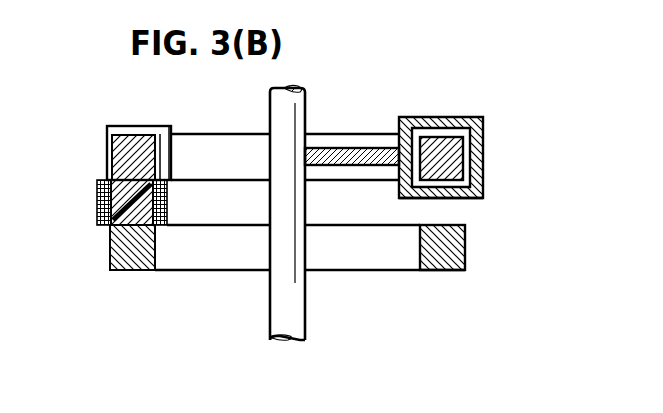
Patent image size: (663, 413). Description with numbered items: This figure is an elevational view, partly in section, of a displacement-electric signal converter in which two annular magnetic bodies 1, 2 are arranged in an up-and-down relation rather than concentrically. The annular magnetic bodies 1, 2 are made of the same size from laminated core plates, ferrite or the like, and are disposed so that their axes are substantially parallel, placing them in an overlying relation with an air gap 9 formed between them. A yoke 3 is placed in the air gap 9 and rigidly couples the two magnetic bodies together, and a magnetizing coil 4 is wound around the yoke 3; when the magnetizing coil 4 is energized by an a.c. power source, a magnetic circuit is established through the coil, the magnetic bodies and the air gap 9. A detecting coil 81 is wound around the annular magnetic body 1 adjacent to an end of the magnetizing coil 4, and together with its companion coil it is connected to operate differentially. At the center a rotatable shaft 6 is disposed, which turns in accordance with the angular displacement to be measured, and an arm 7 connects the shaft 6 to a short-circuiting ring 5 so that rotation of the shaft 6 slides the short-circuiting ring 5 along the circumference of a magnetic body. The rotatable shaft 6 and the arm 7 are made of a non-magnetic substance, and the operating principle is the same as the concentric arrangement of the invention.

The annular magnetic body 1 is at (463, 152).
The annular magnetic body 2 is at (465, 252).
The yoke 3 is at (117, 223).
The magnetizing coil 4 is at (97, 208).
The short-circuiting ring 5 is at (450, 117).
The rotatable shaft 6 is at (307, 108).
The arm 7 is at (370, 148).
The air gap 9 is at (437, 212).
The detecting coil 81 is at (155, 127).